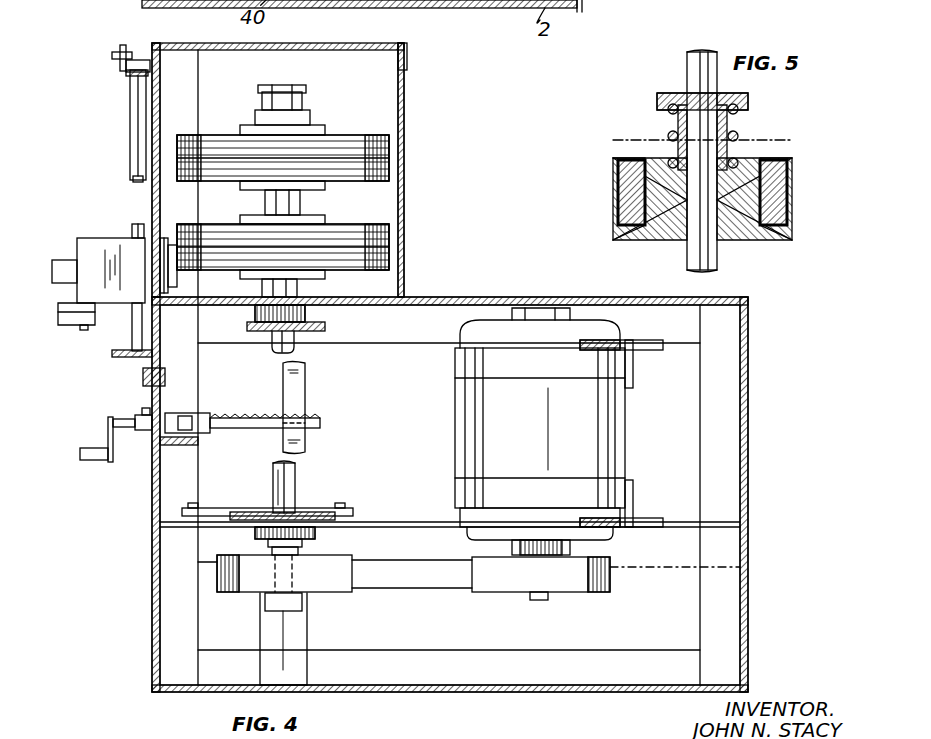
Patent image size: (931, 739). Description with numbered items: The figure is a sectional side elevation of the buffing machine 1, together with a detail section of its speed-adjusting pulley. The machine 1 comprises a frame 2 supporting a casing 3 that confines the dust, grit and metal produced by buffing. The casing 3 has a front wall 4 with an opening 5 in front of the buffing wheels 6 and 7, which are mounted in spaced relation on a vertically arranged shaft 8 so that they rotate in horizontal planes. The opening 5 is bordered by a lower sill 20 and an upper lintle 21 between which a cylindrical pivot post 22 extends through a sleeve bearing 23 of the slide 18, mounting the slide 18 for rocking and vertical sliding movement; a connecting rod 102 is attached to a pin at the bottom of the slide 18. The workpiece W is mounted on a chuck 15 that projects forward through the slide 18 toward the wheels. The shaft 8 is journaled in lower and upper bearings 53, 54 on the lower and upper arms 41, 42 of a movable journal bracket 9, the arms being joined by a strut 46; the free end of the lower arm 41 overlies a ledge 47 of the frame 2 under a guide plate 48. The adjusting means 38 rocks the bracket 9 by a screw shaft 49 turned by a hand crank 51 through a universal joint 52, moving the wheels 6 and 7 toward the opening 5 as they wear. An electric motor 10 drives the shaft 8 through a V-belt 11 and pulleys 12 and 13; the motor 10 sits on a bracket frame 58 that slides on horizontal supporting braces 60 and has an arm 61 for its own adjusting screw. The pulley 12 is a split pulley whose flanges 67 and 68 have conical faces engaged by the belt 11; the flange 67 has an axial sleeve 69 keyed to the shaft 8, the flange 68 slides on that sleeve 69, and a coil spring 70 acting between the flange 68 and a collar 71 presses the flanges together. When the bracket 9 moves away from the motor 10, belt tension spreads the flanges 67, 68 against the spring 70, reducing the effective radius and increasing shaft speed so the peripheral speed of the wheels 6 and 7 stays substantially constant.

In FIG. 4, the machine 1 is at (428, 110).
In FIG. 4, the frame 2 is at (725, 440).
In FIG. 4, the casing 3 is at (748, 356).
In FIG. 4, the front wall 4 is at (152, 570).
In FIG. 4, the opening 5 is at (152, 190).
In FIG. 4, the buffing wheel 6 is at (375, 228).
In FIG. 4, the buffing wheel 7 is at (350, 138).
In FIG. 4, the shaft 8 is at (298, 342).
In FIG. 5, the shaft 8 is at (687, 72).
In FIG. 4, the bracket 9 is at (245, 326).
In FIG. 4, the electric motor 10 is at (455, 427).
In FIG. 4, the V-belt 11 is at (442, 578).
In FIG. 5, the V-belt 11 is at (618, 190).
In FIG. 4, the split pulley 12 is at (337, 593).
In FIG. 5, the split pulley 12 is at (785, 255).
In FIG. 4, the pulley 13 is at (588, 592).
In FIG. 4, the chuck 15 is at (166, 240).
In FIG. 4, the slide 18 is at (84, 238).
In FIG. 4, the lower sill 20 is at (112, 356).
In FIG. 4, the upper lintle 21 is at (130, 72).
In FIG. 4, the pivot post 22 is at (130, 165).
In FIG. 4, the sleeve bearing 23 is at (133, 312).
In FIG. 4, the adjusting means 38 is at (318, 432).
In FIG. 4, the lower arm 41 is at (256, 510).
In FIG. 4, the upper arm 42 is at (262, 335).
In FIG. 4, the strut 46 is at (305, 396).
In FIG. 4, the ledge 47 is at (383, 526).
In FIG. 4, the guide plate 48 is at (312, 510).
In FIG. 4, the screw shaft 49 is at (242, 428).
In FIG. 4, the hand crank 51 is at (108, 438).
In FIG. 4, the universal joint 52 is at (200, 412).
In FIG. 4, the lower bearing 53 is at (312, 532).
In FIG. 4, the upper bearing 54 is at (310, 312).
In FIG. 4, the bracket frame 58 is at (633, 385).
In FIG. 4, the supporting braces 60 is at (618, 530).
In FIG. 4, the arm 61 is at (648, 345).
In FIG. 5, the flange 67 is at (655, 245).
In FIG. 5, the flange 68 is at (635, 148).
In FIG. 5, the axial sleeve 69 is at (673, 120).
In FIG. 5, the coil spring 70 is at (738, 132).
In FIG. 5, the collar 71 is at (748, 96).
In FIG. 4, the connecting rod 102 is at (67, 328).
In FIG. 4, the workpiece W is at (178, 278).